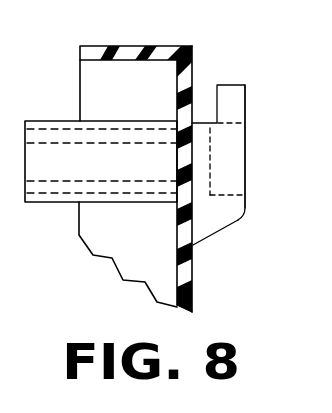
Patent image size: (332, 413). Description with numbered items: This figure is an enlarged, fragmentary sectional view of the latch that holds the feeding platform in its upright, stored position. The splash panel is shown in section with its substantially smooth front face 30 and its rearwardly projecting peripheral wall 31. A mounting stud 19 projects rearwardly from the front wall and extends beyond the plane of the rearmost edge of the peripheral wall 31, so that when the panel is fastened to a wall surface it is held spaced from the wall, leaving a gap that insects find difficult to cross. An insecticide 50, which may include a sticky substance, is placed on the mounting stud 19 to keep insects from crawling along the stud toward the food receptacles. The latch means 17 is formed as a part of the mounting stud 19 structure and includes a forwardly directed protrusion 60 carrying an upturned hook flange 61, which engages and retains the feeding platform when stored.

The mounting stud 19 is at (54, 135).
The peripheral wall 31 is at (133, 46).
The front face 30 is at (191, 295).
The upturned hook flange 61 is at (225, 90).
The latch means 17 is at (251, 96).
The forwardly directed protrusion 60 is at (208, 216).
The insecticide 50 is at (57, 205).